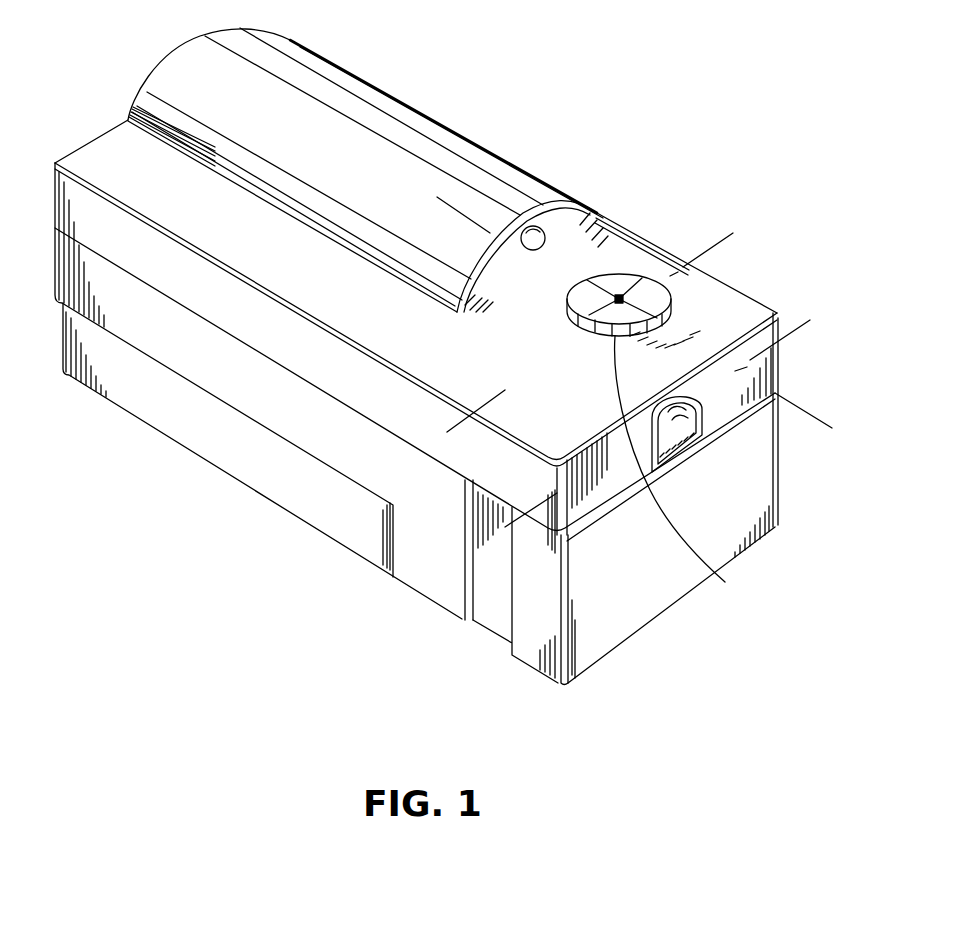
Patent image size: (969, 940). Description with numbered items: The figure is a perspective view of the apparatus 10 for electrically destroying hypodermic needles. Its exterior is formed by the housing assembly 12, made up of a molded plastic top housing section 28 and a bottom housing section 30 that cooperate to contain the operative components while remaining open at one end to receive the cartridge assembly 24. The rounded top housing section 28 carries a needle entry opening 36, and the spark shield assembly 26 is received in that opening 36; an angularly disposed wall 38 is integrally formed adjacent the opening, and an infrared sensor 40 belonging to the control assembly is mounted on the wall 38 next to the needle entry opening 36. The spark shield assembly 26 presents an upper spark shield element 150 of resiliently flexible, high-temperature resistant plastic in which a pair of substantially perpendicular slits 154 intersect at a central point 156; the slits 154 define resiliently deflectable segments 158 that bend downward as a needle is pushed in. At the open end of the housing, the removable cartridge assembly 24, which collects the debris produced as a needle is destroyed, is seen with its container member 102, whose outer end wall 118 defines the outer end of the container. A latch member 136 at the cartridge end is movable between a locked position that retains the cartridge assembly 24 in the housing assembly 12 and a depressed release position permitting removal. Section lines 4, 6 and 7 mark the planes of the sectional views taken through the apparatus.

The apparatus 10 is at (507, 120).
The housing assembly 12 is at (188, 457).
The cartridge assembly 24 is at (617, 638).
The spark shield assembly 26 is at (639, 263).
The top housing section 28 is at (378, 97).
The bottom housing section 30 is at (287, 485).
The needle entry opening 36 is at (687, 296).
The angularly disposed wall 38 is at (607, 273).
The infrared sensor 40 is at (547, 236).
The container member 102 is at (752, 519).
The outer end wall 118 is at (678, 578).
The latch member 136 is at (678, 427).
The upper spark shield element 150 is at (613, 277).
The slits 154 is at (738, 314).
The central point 156 is at (640, 270).
The resiliently deflectable segments 158 is at (692, 469).
The section line 4- 4 is at (710, 217).
The section line 6- 6 is at (787, 306).
The section line 7- 7 is at (857, 410).